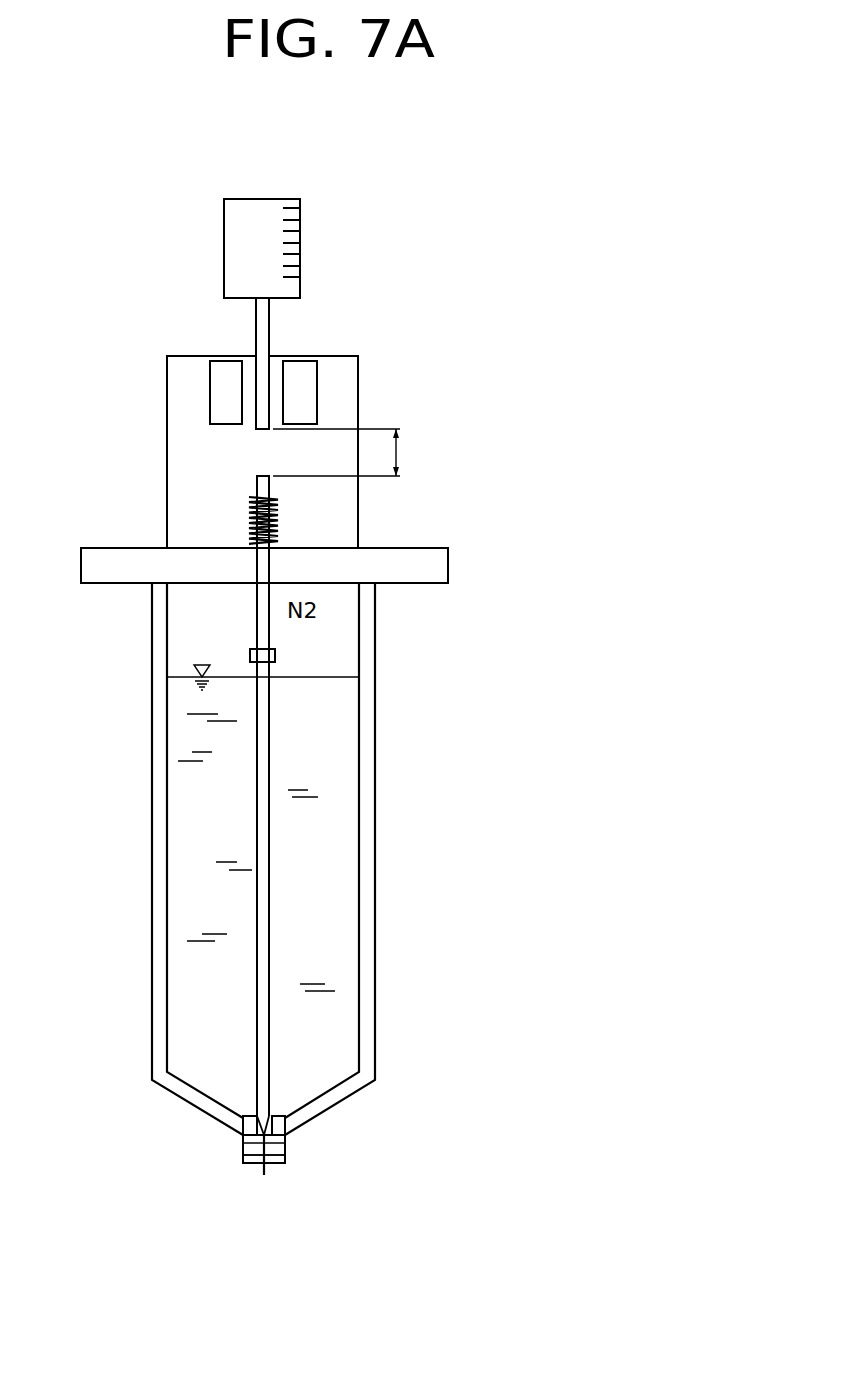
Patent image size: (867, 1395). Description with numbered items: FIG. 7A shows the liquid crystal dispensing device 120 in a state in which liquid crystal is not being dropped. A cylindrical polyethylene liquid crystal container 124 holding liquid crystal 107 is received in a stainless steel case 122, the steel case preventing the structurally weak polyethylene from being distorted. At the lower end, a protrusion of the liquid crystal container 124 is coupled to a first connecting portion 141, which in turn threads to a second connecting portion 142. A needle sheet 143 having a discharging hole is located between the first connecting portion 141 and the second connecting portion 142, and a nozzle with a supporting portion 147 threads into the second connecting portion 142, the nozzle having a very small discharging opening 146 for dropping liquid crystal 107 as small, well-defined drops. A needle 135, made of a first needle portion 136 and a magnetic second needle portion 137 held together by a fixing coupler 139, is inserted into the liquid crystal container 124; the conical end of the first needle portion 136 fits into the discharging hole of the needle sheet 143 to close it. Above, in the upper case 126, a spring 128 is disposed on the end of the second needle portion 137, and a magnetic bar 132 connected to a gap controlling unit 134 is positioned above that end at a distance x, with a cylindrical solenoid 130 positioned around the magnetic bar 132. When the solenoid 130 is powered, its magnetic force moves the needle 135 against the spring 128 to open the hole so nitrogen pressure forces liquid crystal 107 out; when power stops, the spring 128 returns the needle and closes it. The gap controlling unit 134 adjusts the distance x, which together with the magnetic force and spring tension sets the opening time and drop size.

The liquid crystal dispensing device 120 is at (291, 338).
The gap controlling unit 134 is at (242, 240).
The magnetic bar 132 is at (269, 330).
The upper case 126 is at (358, 395).
The solenoid 130 is at (222, 398).
The second needle portion 137 is at (268, 490).
The spring 128 is at (250, 518).
The case 122 is at (375, 1003).
The liquid crystal container 124 is at (359, 845).
The liquid crystal 107 is at (188, 822).
The fixing coupler 139 is at (275, 653).
The needle 135 is at (275, 752).
The first needle portion 136 is at (268, 932).
The first connecting portion 141 is at (245, 1123).
The second connecting portion 142 is at (248, 1149).
The needle sheet 143 is at (280, 1137).
The supporting portion 147 is at (277, 1158).
The discharging opening 146 is at (263, 1172).